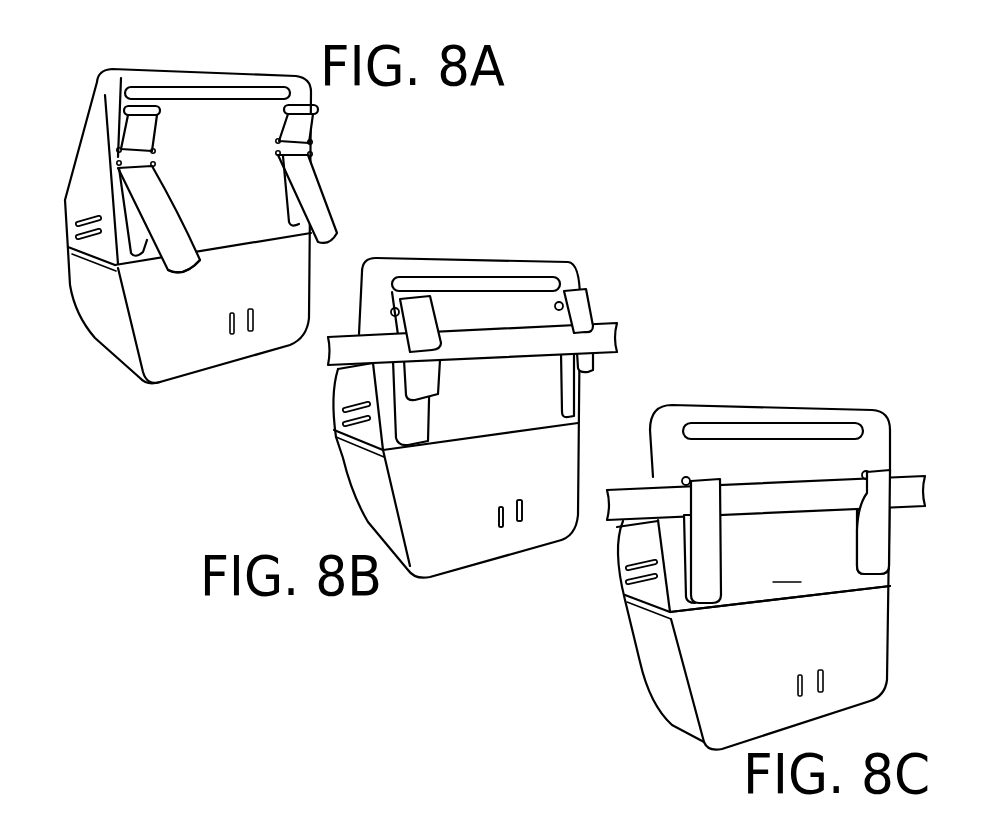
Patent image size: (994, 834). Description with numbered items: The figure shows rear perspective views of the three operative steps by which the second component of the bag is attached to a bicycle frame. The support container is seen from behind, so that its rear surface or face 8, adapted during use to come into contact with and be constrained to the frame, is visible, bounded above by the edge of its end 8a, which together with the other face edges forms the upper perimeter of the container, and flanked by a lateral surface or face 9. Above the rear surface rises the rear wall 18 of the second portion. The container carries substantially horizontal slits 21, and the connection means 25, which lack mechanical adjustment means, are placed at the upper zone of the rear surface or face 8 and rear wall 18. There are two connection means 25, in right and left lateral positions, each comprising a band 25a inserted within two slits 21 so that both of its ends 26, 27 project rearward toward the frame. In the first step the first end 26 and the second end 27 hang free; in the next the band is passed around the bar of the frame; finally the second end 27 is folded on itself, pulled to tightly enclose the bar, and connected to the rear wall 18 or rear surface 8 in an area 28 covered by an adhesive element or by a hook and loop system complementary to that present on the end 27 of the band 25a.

In FIG. 8A, the rear surface or face 8 is at (197, 338).
In FIG. 8B, the rear surface or face 8 is at (458, 520).
In FIG. 8C, the rear surface or face 8 is at (855, 655).
In FIG. 8A, the edge of the end of the rear surface 8a is at (229, 232).
In FIG. 8A, the lateral surface or face 9 is at (96, 297).
In FIG. 8B, the lateral surface or face 9 is at (357, 463).
In FIG. 8C, the lateral surface or face 9 is at (677, 698).
In FIG. 8C, the rear wall 18 is at (780, 585).
In FIG. 8A, the slit 21 is at (117, 167).
In FIG. 8B, the slit 21 is at (497, 522).
In FIG. 8B, the connection means 25 is at (600, 310).
In FIG. 8C, the connection means 25 is at (766, 498).
In FIG. 8A, the band 25a is at (128, 207).
In FIG. 8A, the first end 26 is at (116, 137).
In FIG. 8B, the first end 26 is at (392, 313).
In FIG. 8C, the first end 26 is at (893, 473).
In FIG. 8A, the second end 27 is at (182, 262).
In FIG. 8B, the second end 27 is at (427, 336).
In FIG. 8C, the second end 27 is at (875, 548).
In FIG. 8A, the area 28 is at (72, 249).
In FIG. 8B, the area 28 is at (410, 429).
In FIG. 8C, the area 28 is at (712, 607).